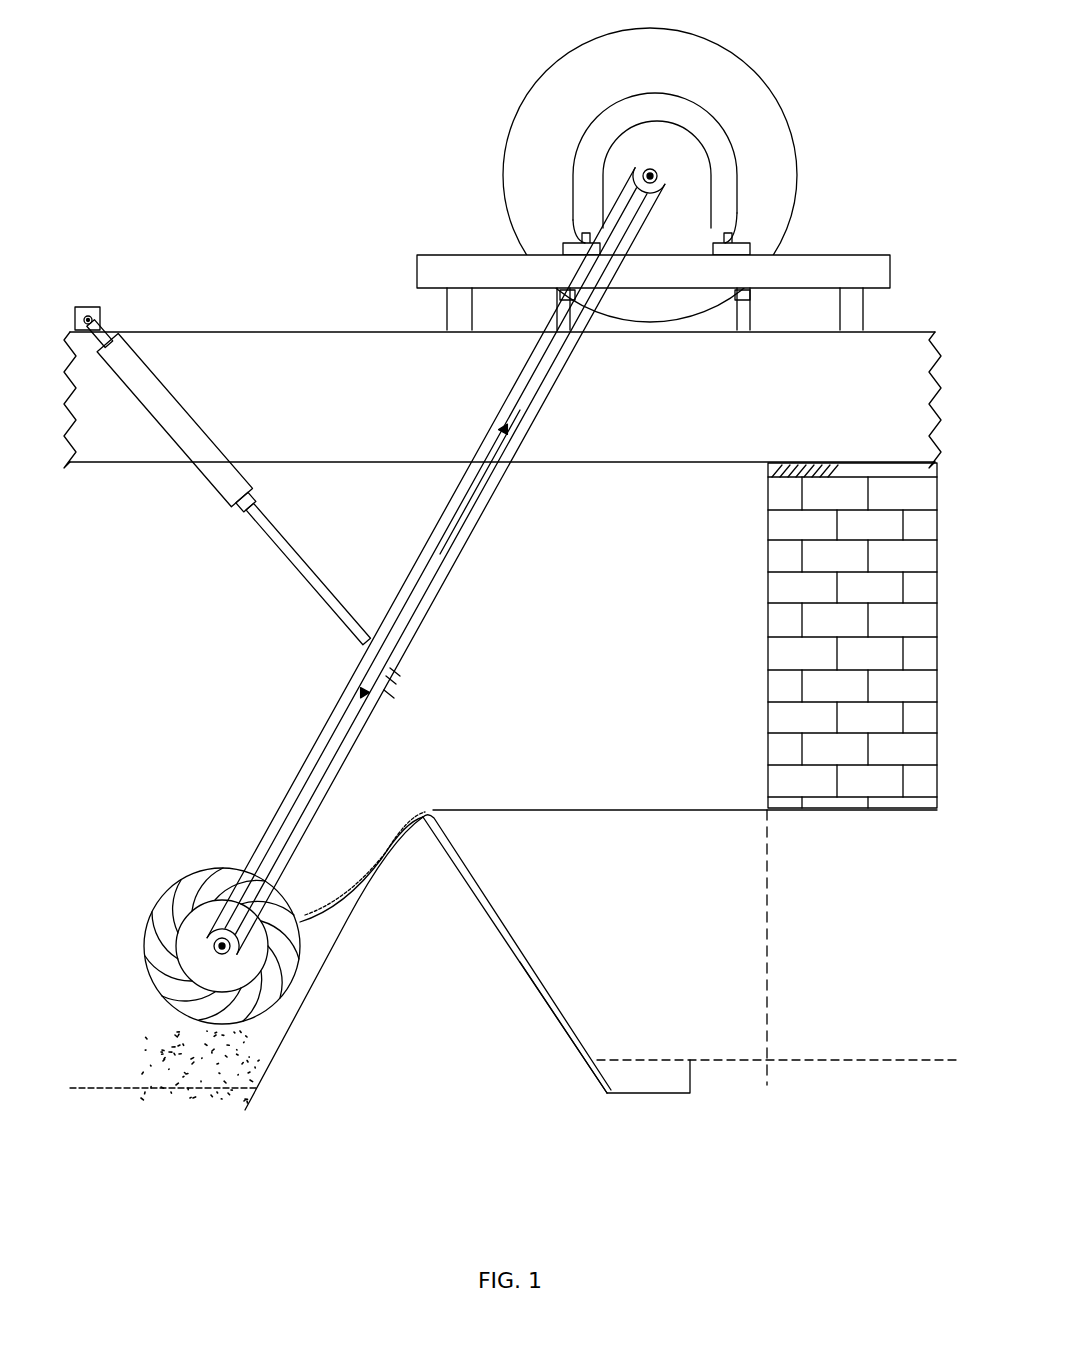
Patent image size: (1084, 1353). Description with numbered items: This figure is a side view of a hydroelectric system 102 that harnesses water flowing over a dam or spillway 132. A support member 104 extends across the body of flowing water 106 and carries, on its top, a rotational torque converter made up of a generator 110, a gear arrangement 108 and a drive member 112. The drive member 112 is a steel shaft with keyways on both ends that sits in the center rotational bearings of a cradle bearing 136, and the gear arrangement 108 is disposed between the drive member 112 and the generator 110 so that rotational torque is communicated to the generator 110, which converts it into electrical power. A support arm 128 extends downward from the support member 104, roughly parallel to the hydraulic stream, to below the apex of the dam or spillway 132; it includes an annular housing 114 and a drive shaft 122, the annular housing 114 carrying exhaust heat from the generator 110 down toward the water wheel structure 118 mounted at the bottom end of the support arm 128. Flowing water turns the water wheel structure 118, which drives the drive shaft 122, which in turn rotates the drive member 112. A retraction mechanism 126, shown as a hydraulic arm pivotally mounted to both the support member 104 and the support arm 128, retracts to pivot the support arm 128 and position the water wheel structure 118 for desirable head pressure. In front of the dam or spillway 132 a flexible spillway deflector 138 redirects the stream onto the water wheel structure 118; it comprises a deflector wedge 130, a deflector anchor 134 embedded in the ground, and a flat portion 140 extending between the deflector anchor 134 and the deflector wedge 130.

The hydroelectric system 102 is at (187, 125).
The support member 104 is at (225, 332).
The body of flowing water 106 is at (673, 810).
The gear arrangement 108 is at (590, 124).
The generator 110 is at (538, 78).
The drive member 112 is at (605, 177).
The annular housing 114 is at (216, 902).
The water wheel structure 118 is at (177, 887).
The drive shaft 122 is at (427, 612).
The retraction mechanism 126 is at (283, 557).
The support arm 128 is at (473, 530).
The deflector wedge 130 is at (333, 943).
The dam or spillway 132 is at (495, 905).
The deflector anchor 134 is at (668, 1060).
The cradle bearing 136 is at (600, 165).
The spillway deflector 138 is at (340, 928).
The flat portion 140 is at (537, 968).